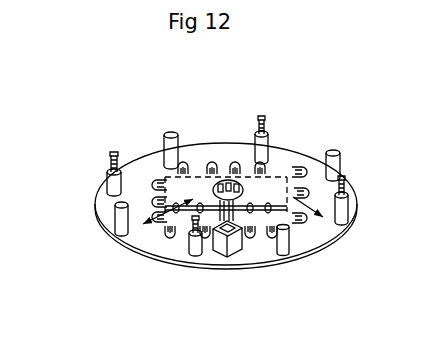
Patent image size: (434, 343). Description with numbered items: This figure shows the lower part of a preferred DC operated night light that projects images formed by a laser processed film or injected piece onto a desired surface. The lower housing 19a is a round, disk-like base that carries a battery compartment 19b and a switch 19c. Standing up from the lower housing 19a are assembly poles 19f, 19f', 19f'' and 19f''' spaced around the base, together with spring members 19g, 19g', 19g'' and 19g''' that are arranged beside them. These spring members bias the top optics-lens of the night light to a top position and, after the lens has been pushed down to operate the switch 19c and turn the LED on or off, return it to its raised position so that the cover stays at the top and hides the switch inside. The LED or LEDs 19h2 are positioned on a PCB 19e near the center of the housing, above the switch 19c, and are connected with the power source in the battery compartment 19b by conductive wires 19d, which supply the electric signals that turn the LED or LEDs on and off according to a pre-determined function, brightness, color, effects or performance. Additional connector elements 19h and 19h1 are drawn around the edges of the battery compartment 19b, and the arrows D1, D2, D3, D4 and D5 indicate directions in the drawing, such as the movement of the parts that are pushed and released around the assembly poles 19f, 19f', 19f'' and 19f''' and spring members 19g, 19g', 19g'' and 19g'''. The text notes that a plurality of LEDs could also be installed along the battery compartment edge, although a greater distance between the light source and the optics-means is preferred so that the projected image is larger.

The lower housing 19a is at (235, 267).
The battery compartment 19b is at (148, 226).
The switch 19c is at (236, 245).
The conductive wires 19d is at (221, 223).
The PCB 19e is at (246, 189).
The assembly pole 19f is at (326, 253).
The assembly pole 19f' is at (375, 157).
The assembly pole 19f'' is at (136, 133).
The assembly pole 19f''' is at (69, 219).
The spring member 19g is at (380, 201).
The spring member 19g' is at (290, 127).
The spring member 19g'' is at (63, 172).
The spring member 19g''' is at (139, 257).
The connector 19h is at (160, 176).
The connector 19h1 is at (292, 177).
The LED 19h2 is at (219, 175).
The direction arrow D1 is at (171, 116).
The direction arrow D2 is at (208, 165).
The direction arrow D3 is at (268, 167).
The direction arrow D4 is at (317, 193).
The direction arrow D5 is at (159, 179).